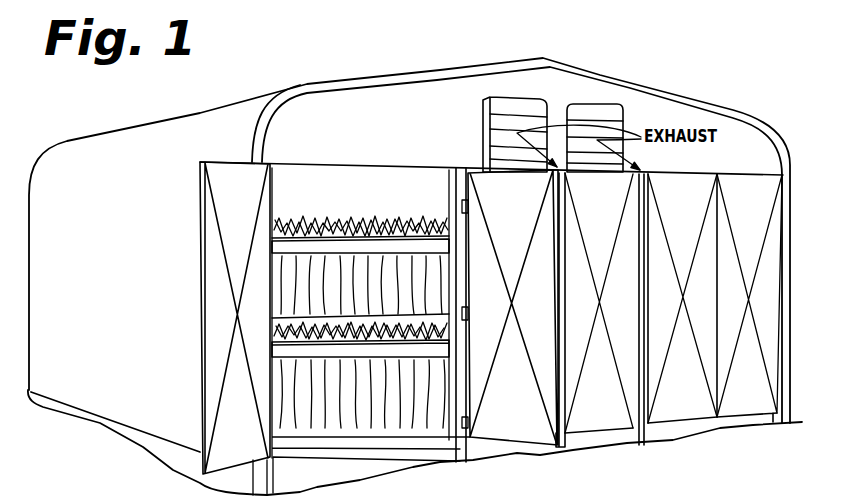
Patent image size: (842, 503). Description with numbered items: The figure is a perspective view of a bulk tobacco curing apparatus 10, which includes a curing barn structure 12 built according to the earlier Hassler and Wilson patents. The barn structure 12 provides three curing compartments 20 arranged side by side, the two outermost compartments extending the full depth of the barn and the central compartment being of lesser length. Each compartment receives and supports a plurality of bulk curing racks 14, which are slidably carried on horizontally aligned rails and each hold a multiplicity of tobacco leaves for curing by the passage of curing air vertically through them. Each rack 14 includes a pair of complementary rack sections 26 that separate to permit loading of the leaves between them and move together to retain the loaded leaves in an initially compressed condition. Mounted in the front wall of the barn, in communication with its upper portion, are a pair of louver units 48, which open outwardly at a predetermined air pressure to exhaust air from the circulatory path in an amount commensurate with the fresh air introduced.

The bulk tobacco curing apparatus 10 is at (680, 82).
The curing barn structure 12 is at (790, 90).
The bulk curing racks 14 is at (449, 243).
The curing compartments 20 is at (449, 288).
The rack sections 26 is at (394, 250).
The louver units 48 is at (537, 95).